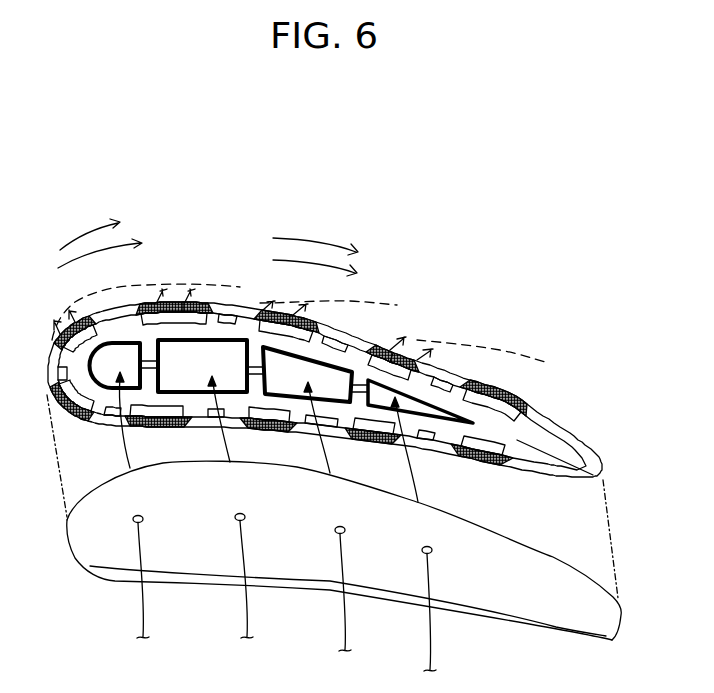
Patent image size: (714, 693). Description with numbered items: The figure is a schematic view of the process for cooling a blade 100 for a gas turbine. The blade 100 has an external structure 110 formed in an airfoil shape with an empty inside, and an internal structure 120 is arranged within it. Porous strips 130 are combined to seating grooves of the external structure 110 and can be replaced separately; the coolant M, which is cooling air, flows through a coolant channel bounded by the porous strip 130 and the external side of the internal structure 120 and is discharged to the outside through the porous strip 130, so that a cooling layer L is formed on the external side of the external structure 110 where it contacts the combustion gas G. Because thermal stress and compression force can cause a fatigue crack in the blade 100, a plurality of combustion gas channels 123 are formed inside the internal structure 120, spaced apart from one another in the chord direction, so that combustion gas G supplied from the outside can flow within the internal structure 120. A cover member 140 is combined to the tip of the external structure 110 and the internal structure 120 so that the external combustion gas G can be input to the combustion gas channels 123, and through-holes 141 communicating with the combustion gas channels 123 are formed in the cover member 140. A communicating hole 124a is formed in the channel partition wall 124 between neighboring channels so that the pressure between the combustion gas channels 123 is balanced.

The blade 100 is at (583, 420).
The external structure 110 is at (550, 428).
The internal structure 120 is at (523, 438).
The combustion gas channel 123 is at (105, 368).
The channel partition wall 124 is at (257, 383).
The communicating hole 124a is at (357, 397).
The porous strip 130 is at (490, 465).
The cover member 140 is at (107, 562).
The through-hole 141 is at (240, 522).
The combustion gas G is at (90, 230).
The cooling layer L is at (380, 304).
The coolant M is at (413, 350).